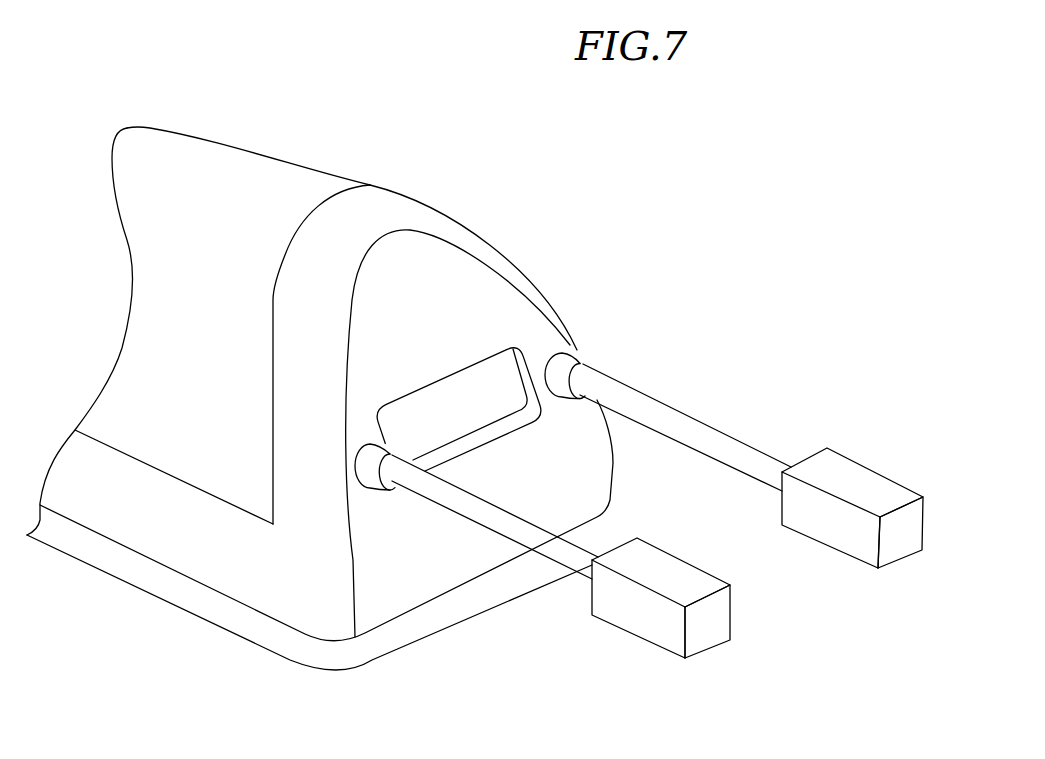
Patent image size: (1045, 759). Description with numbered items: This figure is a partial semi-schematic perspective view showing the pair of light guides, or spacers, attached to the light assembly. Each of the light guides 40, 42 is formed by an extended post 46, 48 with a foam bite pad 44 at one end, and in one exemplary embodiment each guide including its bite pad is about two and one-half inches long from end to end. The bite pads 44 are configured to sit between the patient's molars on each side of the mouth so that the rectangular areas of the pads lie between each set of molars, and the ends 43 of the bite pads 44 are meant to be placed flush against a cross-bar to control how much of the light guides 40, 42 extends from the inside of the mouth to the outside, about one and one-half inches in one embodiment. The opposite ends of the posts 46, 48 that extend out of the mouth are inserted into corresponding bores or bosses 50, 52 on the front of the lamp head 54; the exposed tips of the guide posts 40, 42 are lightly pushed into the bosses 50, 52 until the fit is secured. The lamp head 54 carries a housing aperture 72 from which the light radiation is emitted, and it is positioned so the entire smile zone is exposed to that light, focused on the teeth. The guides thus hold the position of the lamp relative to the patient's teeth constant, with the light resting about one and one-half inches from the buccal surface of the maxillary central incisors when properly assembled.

The light guide 40 is at (510, 540).
The light guide 42 is at (725, 430).
The end of bite pad 43 is at (705, 622).
The foam bite pad 44 is at (658, 618).
The extended post 46 is at (647, 412).
The extended post 48 is at (495, 520).
The boss 50 is at (365, 473).
The boss 52 is at (572, 358).
The lamp head 54 is at (223, 269).
The housing aperture 72 is at (440, 400).